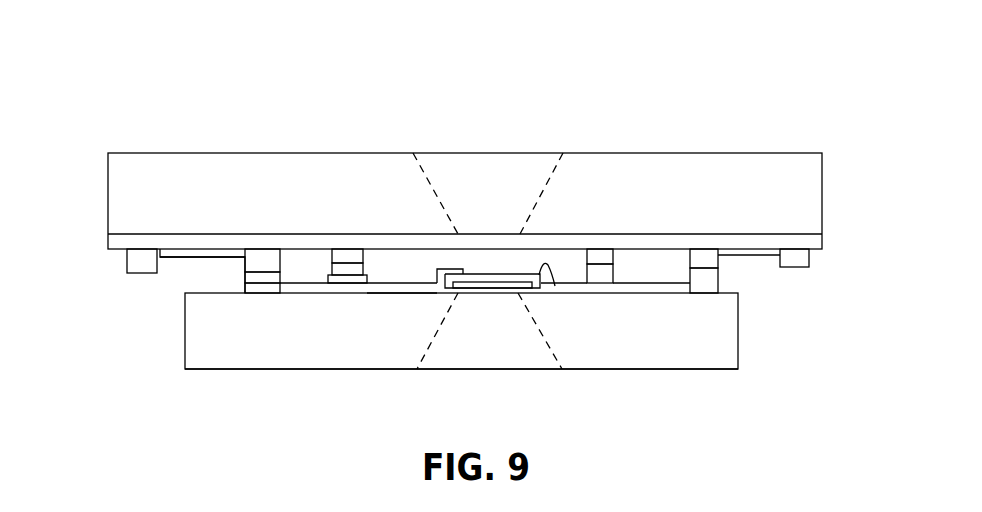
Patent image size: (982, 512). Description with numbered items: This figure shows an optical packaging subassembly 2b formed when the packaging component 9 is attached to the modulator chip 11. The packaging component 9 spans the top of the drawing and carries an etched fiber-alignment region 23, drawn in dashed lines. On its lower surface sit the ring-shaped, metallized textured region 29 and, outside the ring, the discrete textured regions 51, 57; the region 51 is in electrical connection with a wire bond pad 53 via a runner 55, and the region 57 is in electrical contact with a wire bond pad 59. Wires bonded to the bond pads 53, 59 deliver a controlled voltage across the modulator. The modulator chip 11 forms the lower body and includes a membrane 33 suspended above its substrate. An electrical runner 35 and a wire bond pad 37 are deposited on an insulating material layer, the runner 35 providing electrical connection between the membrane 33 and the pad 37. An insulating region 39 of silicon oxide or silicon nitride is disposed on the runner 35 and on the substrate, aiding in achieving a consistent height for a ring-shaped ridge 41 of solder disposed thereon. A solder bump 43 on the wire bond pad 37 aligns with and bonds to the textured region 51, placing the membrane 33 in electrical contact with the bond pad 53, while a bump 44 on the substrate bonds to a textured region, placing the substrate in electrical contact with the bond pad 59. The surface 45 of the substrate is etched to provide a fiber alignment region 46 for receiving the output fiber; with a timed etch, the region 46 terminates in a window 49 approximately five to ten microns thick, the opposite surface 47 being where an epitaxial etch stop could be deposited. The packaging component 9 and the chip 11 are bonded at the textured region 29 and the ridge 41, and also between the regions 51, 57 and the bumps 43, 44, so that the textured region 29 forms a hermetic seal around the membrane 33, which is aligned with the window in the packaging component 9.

The optical packaging subassembly 2b is at (304, 95).
The packaging component 9 is at (823, 190).
The modulator chip 11 is at (740, 342).
The fiber-alignment region 23 is at (473, 165).
The textured region 29 is at (352, 255).
The membrane 33 is at (554, 287).
The electrical runner 35 is at (407, 293).
The wire bond pad 37 is at (263, 286).
The insulating region 39 is at (350, 278).
The ring-shaped ridge 41 is at (342, 269).
The solder bump 43 is at (270, 277).
The bump 44 is at (706, 293).
The surface of the substrate 45 is at (235, 370).
The fiber alignment region 46 is at (433, 370).
The surface of the substrate 47 is at (200, 293).
The window 49 is at (490, 289).
The textured region 51 is at (253, 257).
The wire bond pad 53 is at (142, 268).
The runner 55 is at (186, 259).
The textured region 57 is at (705, 256).
The wire bond pad 59 is at (795, 268).